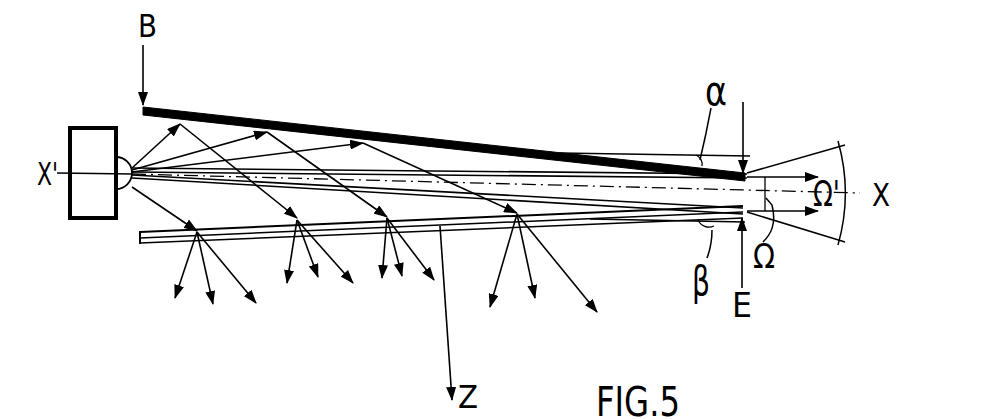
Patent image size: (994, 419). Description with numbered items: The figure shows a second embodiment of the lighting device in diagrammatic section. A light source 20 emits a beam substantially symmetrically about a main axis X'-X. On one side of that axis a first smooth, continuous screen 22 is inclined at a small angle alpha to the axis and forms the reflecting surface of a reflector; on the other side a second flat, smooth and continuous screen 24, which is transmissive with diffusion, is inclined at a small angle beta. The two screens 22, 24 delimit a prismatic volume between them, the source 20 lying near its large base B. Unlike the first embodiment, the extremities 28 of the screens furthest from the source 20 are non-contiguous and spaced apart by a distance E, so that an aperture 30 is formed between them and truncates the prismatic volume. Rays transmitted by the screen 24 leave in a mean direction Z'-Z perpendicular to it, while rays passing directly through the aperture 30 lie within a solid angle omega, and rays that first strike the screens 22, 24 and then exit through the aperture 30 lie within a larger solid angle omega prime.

The light source 20 is at (129, 195).
The first screen 22 is at (420, 136).
The second screen 24 is at (148, 246).
The extremities of the screens 28 is at (665, 157).
The aperture 30 is at (747, 187).